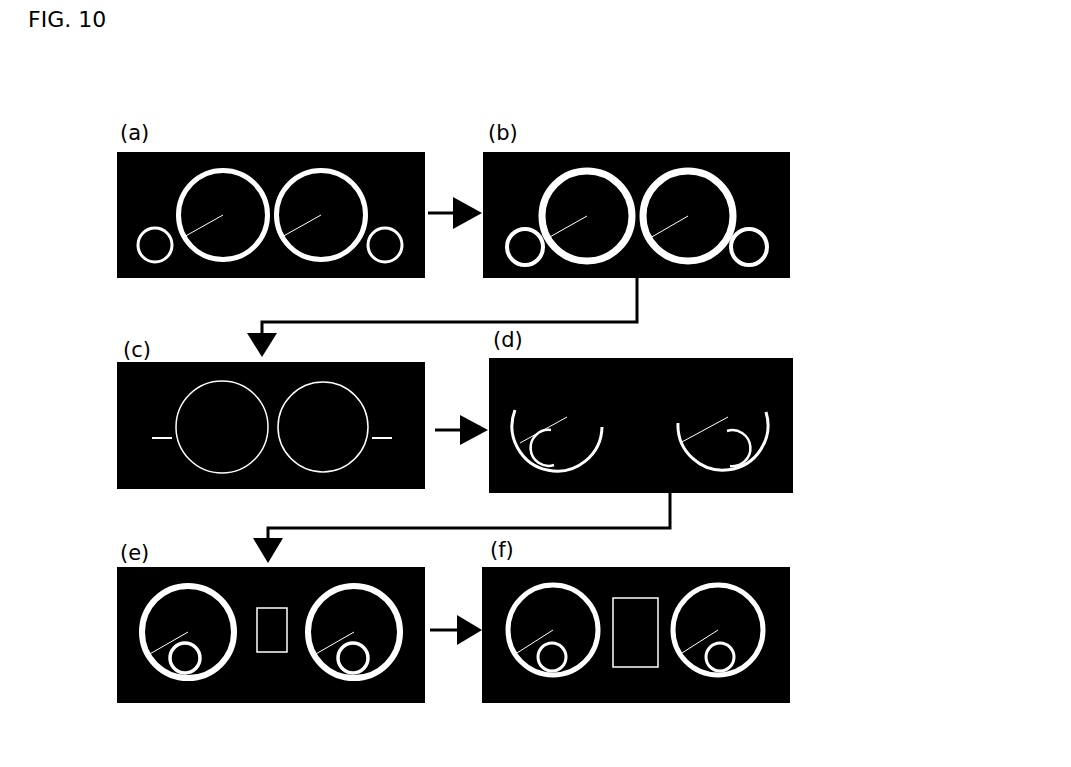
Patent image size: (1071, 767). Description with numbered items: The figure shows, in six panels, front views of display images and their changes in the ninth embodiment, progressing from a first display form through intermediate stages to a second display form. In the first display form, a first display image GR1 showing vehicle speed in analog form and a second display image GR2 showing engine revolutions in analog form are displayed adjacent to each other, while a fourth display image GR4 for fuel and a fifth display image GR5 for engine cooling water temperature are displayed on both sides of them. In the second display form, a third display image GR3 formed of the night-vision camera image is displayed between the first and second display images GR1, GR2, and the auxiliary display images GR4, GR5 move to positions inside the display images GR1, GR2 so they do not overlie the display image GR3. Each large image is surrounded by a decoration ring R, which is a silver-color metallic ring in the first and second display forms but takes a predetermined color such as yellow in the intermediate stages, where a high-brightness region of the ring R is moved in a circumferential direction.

The first display image GR1 is at (210, 165).
The second display image GR2 is at (335, 163).
The third display image GR3 is at (273, 653).
The fourth display image GR4 is at (142, 253).
The fifth display image GR5 is at (400, 253).
The decoration ring R is at (238, 173).